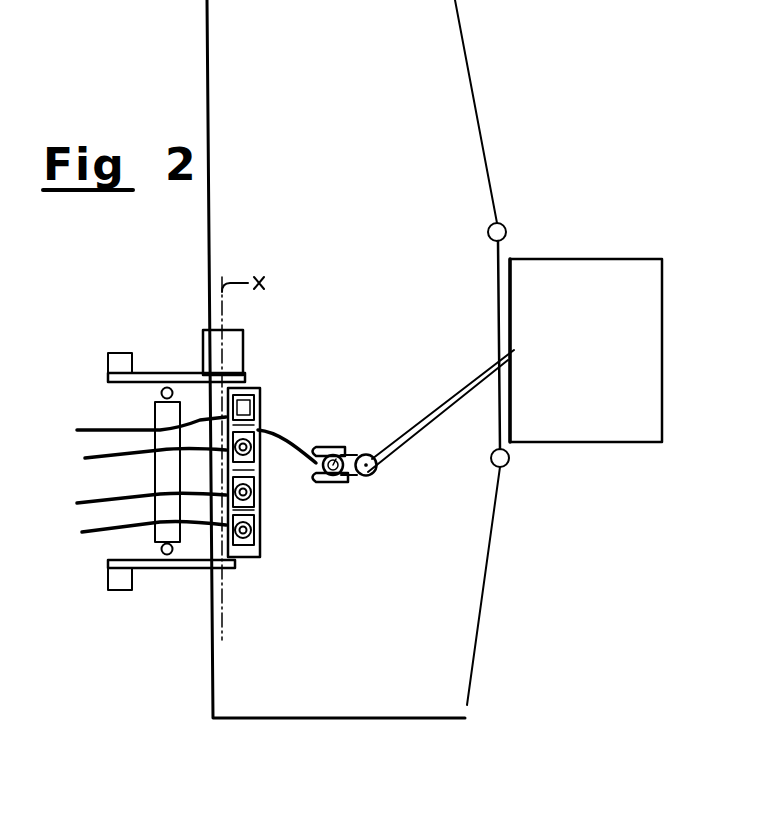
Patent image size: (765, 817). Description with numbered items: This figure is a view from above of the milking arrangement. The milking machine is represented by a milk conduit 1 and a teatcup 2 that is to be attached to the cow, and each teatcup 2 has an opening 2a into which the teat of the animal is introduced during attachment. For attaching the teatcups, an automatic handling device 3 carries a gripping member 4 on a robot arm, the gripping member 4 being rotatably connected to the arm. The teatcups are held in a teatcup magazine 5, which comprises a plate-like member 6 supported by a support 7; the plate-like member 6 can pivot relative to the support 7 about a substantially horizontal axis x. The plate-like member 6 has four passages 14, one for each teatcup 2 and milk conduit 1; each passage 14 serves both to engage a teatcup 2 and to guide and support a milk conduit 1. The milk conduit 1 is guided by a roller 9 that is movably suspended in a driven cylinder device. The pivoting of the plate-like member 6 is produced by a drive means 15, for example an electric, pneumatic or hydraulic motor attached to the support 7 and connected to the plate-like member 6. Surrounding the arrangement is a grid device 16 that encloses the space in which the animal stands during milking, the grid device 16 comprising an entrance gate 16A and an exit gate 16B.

The milk conduit 1 is at (82, 531).
The teatcup 2 is at (325, 480).
The opening 2a is at (261, 430).
The automatic handling device 3 is at (590, 275).
The gripping member 4 is at (355, 483).
The teatcup magazine 5 is at (292, 535).
The plate-like member 6 is at (256, 388).
The support 7 is at (180, 568).
The roller 9 is at (158, 418).
The passage 14 is at (258, 405).
The drive means 15 is at (233, 345).
The grid device 16 is at (326, 718).
The entrance gate 16A is at (483, 592).
The exit gate 16B is at (470, 75).